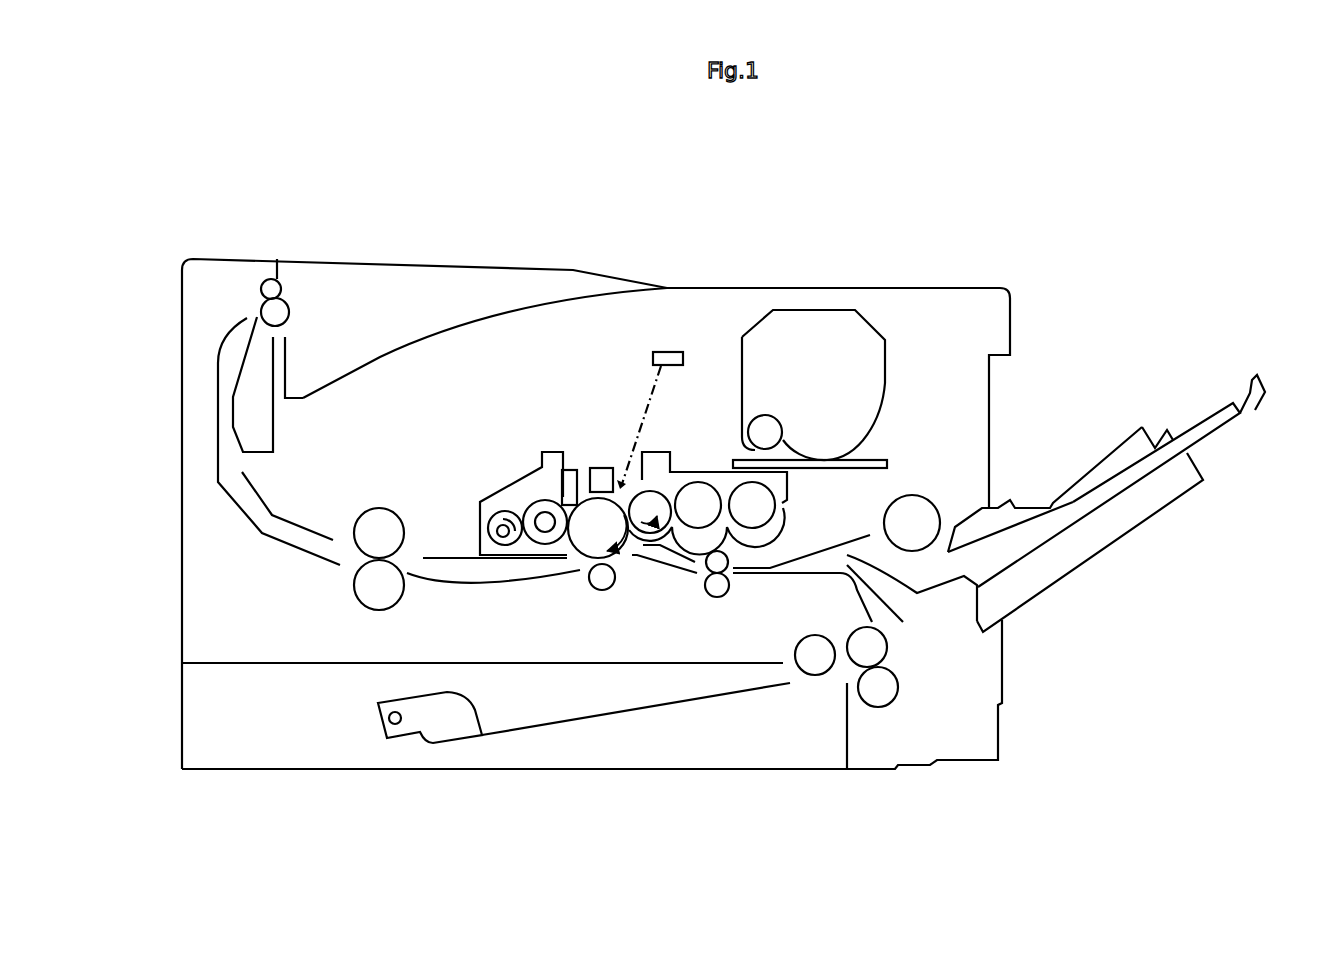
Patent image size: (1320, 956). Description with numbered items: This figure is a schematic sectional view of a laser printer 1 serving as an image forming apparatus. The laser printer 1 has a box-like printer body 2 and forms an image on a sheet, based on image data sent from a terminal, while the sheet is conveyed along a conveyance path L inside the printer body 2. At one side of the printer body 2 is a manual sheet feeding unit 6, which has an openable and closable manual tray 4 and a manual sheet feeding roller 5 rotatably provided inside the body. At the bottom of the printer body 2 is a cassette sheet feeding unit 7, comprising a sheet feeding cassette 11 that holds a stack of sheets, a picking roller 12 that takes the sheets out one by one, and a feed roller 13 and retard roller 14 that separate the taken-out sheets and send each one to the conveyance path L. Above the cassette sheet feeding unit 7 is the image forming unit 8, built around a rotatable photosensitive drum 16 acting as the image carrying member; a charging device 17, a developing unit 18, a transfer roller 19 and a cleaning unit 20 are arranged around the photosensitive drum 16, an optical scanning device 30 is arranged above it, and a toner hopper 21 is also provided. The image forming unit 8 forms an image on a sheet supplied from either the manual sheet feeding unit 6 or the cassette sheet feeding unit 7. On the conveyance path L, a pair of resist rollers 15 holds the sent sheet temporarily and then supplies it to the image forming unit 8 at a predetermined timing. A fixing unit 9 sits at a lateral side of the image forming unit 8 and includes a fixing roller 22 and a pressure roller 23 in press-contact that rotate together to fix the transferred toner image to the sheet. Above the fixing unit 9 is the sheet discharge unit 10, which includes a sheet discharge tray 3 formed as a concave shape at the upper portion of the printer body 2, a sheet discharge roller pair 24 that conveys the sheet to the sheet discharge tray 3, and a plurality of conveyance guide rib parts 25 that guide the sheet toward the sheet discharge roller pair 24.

The laser printer 1 is at (657, 132).
The printer body 2 is at (182, 525).
The sheet discharge tray 3 is at (380, 357).
The manual tray 4 is at (1197, 430).
The manual sheet feeding roller 5 is at (920, 500).
The manual sheet feeding unit 6 is at (1103, 372).
The cassette sheet feeding unit 7 is at (925, 660).
The image forming unit 8 is at (710, 427).
The fixing unit 9 is at (335, 583).
The sheet discharge unit 10 is at (233, 288).
The sheet feeding cassette 11 is at (691, 702).
The picking roller 12 is at (818, 668).
The feed roller 13 is at (878, 645).
The retard roller 14 is at (887, 693).
The resist rollers 15 is at (728, 567).
The photosensitive drum 16 is at (623, 555).
The charging device 17 is at (602, 468).
The developing unit 18 is at (787, 510).
The transfer roller 19 is at (608, 590).
The cleaning unit 20 is at (490, 502).
The toner hopper 21 is at (817, 333).
The fixing roller 22 is at (379, 509).
The pressure roller 23 is at (366, 601).
The sheet discharge roller pair 24 is at (284, 300).
The conveyance guide rib parts 25 is at (278, 438).
The optical scanning device 30 is at (665, 352).
The conveyance path L is at (477, 583).